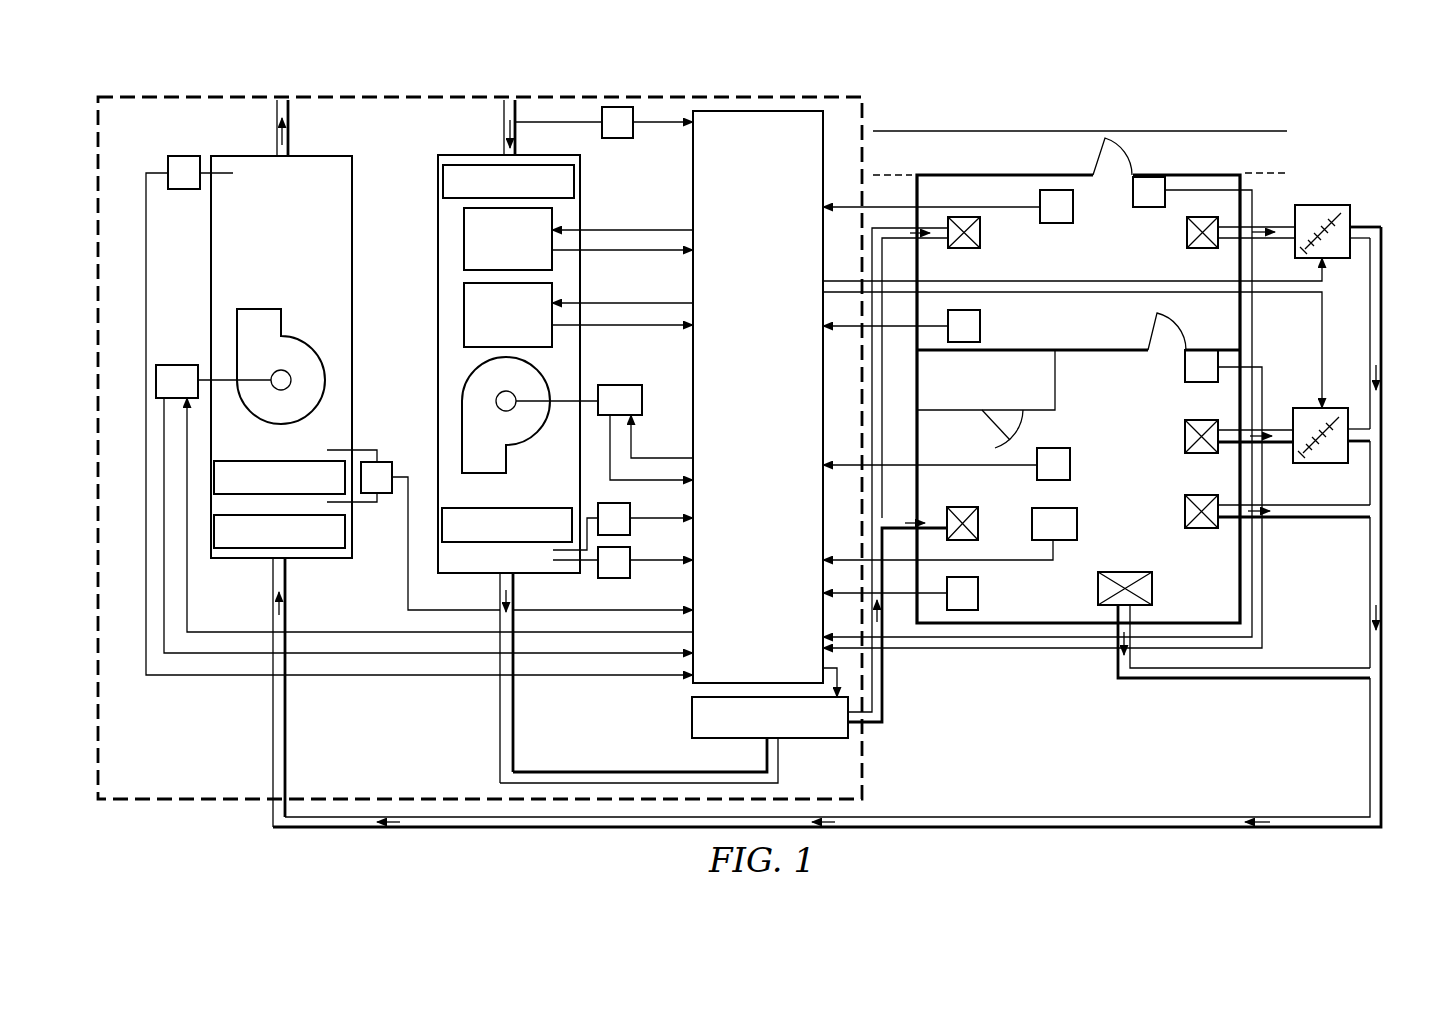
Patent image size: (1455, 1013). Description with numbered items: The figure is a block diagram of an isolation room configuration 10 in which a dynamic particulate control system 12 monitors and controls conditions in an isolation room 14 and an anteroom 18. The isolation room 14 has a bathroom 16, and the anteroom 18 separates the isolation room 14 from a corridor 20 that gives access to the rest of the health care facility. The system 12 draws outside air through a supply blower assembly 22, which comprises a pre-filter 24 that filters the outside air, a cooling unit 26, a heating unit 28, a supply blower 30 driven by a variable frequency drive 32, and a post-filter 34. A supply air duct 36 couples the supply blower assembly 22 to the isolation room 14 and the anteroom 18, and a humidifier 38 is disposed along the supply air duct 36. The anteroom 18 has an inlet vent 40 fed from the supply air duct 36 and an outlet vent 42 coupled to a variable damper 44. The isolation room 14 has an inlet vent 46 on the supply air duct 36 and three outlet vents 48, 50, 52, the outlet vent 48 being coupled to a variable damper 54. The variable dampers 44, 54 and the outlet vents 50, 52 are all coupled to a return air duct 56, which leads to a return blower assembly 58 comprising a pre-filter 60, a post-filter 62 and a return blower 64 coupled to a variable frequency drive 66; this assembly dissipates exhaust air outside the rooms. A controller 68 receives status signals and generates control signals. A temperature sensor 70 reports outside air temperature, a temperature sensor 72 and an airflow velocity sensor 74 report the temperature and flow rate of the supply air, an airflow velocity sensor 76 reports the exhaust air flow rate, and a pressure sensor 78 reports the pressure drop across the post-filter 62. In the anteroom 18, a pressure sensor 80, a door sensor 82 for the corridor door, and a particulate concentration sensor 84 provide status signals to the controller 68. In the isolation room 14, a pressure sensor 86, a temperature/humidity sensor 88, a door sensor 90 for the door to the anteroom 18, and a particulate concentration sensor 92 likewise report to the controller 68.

The isolation room configuration 10 is at (1412, 95).
The dynamic particulate control system 12 is at (862, 118).
The isolation room 14 is at (1106, 478).
The bathroom 16 is at (966, 408).
The anteroom 18 is at (993, 271).
The corridor 20 is at (1049, 165).
The supply blower assembly 22 is at (580, 217).
The pre-filter 24 is at (482, 165).
The cooling unit 26 is at (464, 240).
The heating unit 28 is at (464, 313).
The supply blower 30 is at (471, 457).
The variable frequency drive 32 is at (618, 385).
The post-filter 34 is at (548, 508).
The supply air duct 36 is at (500, 718).
The humidifier 38 is at (692, 718).
The inlet vent 40 is at (980, 232).
The outlet vent 42 is at (1187, 232).
The variable damper 44 is at (1324, 205).
The inlet vent 46 is at (978, 525).
The outlet vent 48 is at (1200, 453).
The outlet vent 50 is at (1200, 528).
The outlet vent 52 is at (1152, 590).
The variable damper 54 is at (1332, 408).
The return air duct 56 is at (1381, 730).
The return blower assembly 58 is at (352, 183).
The pre-filter 60 is at (345, 535).
The post-filter 62 is at (238, 461).
The return blower 64 is at (245, 343).
The variable frequency drive 66 is at (170, 365).
The controller 68 is at (744, 381).
The temperature sensor 70 is at (633, 130).
The temperature sensor 72 is at (630, 510).
The airflow velocity sensor 74 is at (630, 570).
The airflow velocity sensor 76 is at (168, 162).
The pressure sensor 78 is at (378, 462).
The pressure sensor 80 is at (1040, 195).
The door sensor 82 is at (1133, 184).
The particulate concentration sensor 84 is at (980, 326).
The pressure sensor 86 is at (1037, 470).
The temperature/humidity sensor 88 is at (1077, 525).
The door sensor 90 is at (1185, 360).
The particulate concentration sensor 92 is at (978, 593).